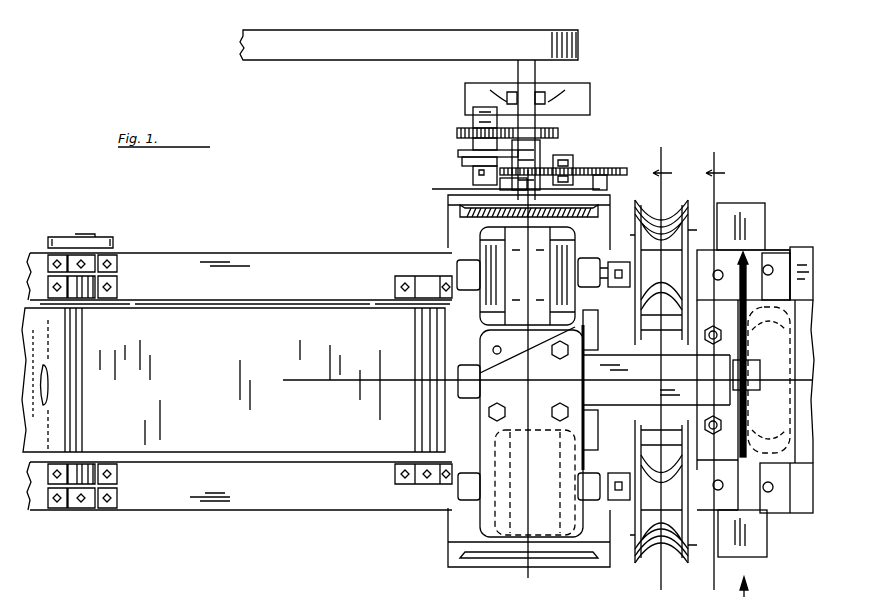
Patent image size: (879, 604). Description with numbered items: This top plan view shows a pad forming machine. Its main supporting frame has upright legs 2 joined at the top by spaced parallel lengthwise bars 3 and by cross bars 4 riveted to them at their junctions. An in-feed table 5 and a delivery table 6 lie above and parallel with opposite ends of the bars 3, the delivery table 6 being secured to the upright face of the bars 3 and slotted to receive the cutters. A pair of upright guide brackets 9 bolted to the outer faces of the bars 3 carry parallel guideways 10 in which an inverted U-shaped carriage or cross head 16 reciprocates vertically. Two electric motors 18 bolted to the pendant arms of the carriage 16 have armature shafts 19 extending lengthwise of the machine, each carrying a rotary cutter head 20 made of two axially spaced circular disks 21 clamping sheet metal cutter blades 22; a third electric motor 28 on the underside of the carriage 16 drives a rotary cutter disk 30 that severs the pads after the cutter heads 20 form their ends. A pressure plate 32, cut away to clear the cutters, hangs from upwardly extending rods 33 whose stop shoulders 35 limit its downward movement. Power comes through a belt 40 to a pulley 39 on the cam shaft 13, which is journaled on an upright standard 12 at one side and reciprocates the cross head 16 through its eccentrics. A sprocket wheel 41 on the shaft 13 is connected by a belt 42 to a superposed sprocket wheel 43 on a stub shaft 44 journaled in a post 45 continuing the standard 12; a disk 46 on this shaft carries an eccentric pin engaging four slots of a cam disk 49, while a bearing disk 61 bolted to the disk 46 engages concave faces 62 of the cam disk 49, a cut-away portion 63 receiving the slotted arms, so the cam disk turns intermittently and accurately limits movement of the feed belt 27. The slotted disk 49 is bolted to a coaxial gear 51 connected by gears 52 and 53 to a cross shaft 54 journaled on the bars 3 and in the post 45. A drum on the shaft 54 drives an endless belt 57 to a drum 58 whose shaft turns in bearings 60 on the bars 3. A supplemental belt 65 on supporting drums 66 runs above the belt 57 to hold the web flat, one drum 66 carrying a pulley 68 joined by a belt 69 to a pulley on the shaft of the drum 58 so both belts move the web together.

The upright legs 2 is at (786, 247).
The lengthwise bars 3 is at (310, 253).
The cross bars 4 is at (432, 189).
The in-feed table 5 is at (662, 369).
The delivery table 6 is at (800, 495).
The upright guide brackets 9 is at (448, 200).
The guideways 10 is at (462, 213).
The upright standard 12 is at (555, 99).
The rotary cross shaft 13 is at (518, 71).
The carriage or cross head 16 is at (514, 218).
The electric motors 18 is at (547, 273).
The armature shafts 19 is at (618, 514).
The rotary cutter heads 20 is at (690, 233).
The circular disks 21 is at (637, 235).
The sheet metal cutter blades 22 is at (669, 206).
The belt 27 is at (672, 300).
The third electric motor 28 is at (490, 350).
The rotary cutter disk 30 is at (763, 269).
The pressure plate 32 is at (742, 512).
The rods 33 is at (748, 330).
The stop shoulders 35 is at (725, 337).
The pulley 39 is at (578, 58).
The belt 40 is at (373, 50).
The sprocket wheel 41 is at (558, 130).
The belt 42 is at (558, 136).
The sprocket wheel 43 is at (457, 131).
The stub shaft 44 is at (473, 144).
The post 45 is at (473, 114).
The disk 46 is at (458, 153).
The cam disk 49 is at (473, 174).
The gear 51 is at (546, 176).
The gear 52 is at (573, 163).
The gear 53 is at (627, 171).
The cross shaft 54 is at (607, 186).
The endless belt 57 is at (478, 437).
The drum 58 is at (38, 367).
The bearings 60 is at (112, 287).
The bearing disk 61 is at (462, 161).
The concave faces 62 is at (511, 186).
The cut-away portion 63 is at (519, 164).
The supplemental belt 65 is at (222, 380).
The supporting drums 66 is at (130, 304).
The pulley 68 is at (106, 240).
The belt 69 is at (113, 242).